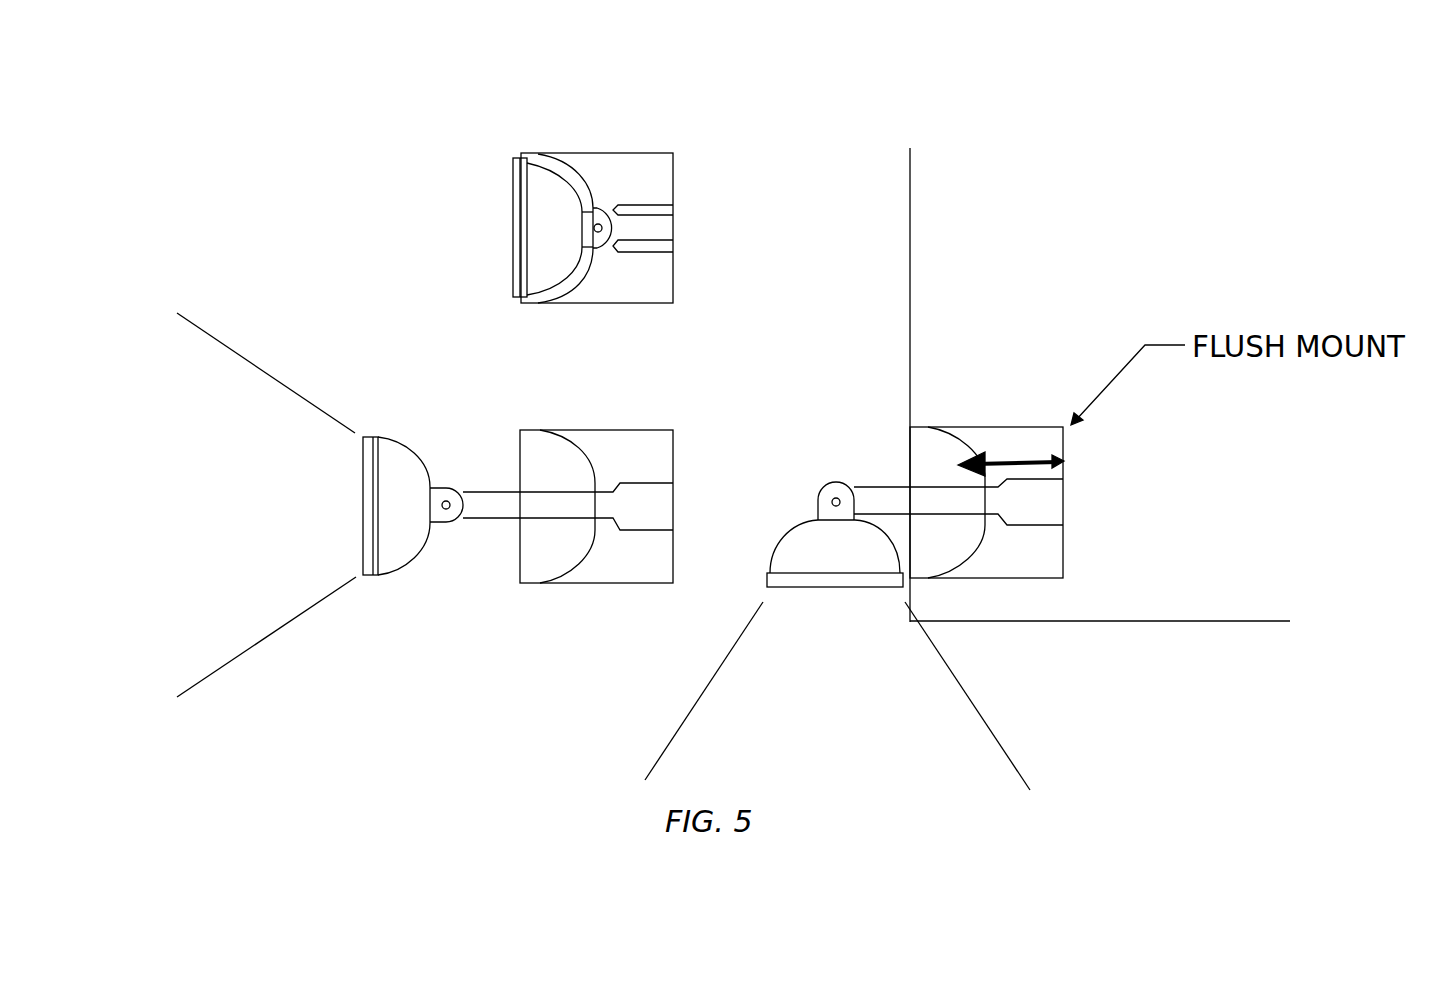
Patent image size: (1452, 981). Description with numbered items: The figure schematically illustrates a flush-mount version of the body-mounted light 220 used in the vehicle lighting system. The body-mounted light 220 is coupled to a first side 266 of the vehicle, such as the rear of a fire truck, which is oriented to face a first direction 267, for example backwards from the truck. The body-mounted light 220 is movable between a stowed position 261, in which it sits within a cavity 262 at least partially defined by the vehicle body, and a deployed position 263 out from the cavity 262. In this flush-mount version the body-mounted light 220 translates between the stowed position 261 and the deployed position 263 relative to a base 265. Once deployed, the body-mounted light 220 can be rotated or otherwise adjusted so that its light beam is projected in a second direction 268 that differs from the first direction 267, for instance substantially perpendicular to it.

The body-mounted light 220 is at (556, 262).
The stowed position 261 is at (595, 150).
The cavity 262 is at (582, 196).
The deployed position 263 is at (401, 606).
The base 265 is at (1049, 532).
The first side 266 is at (913, 287).
The first direction 267 is at (910, 258).
The second direction 268 is at (843, 632).